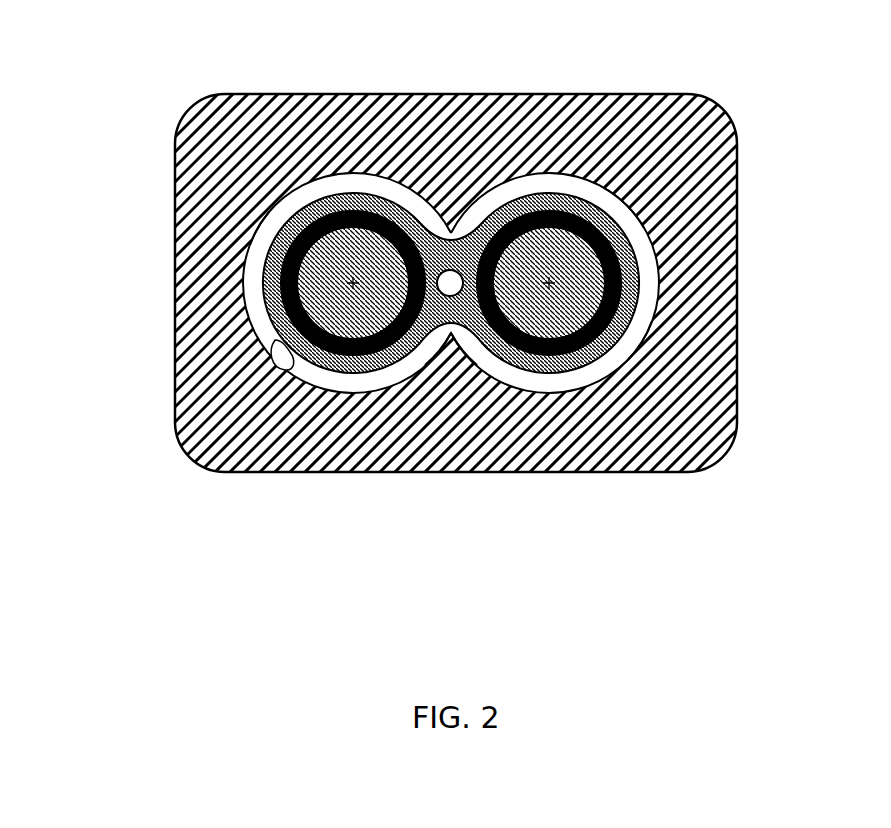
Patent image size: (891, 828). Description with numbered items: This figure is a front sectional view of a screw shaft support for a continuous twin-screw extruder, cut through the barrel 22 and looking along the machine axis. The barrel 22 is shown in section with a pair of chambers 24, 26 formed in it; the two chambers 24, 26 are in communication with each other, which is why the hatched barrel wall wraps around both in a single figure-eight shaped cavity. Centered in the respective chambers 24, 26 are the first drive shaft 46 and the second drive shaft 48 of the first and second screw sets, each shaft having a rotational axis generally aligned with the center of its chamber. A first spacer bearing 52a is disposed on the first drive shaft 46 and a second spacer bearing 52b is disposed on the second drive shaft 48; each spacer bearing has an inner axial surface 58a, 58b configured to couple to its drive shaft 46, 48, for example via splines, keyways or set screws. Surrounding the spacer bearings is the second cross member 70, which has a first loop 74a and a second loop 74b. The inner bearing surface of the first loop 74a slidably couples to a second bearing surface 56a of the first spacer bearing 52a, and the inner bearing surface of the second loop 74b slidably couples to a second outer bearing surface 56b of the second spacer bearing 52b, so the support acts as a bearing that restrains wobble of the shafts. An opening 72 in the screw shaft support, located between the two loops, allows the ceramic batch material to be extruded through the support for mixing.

The barrel 22 is at (175, 231).
The chamber 24 is at (629, 197).
The chamber 26 is at (266, 224).
The first drive shaft 46 is at (560, 300).
The second drive shaft 48 is at (355, 303).
The first spacer bearing 52a is at (640, 240).
The second spacer bearing 52b is at (348, 190).
The second bearing surface 56a is at (537, 370).
The second outer bearing surface 56b is at (306, 210).
The inner axial surface 58a is at (548, 192).
The inner axial surface 58b is at (383, 363).
The second cross member 70 is at (449, 336).
The opening 72 is at (452, 271).
The first loop 74a is at (640, 320).
The second loop 74b is at (285, 378).